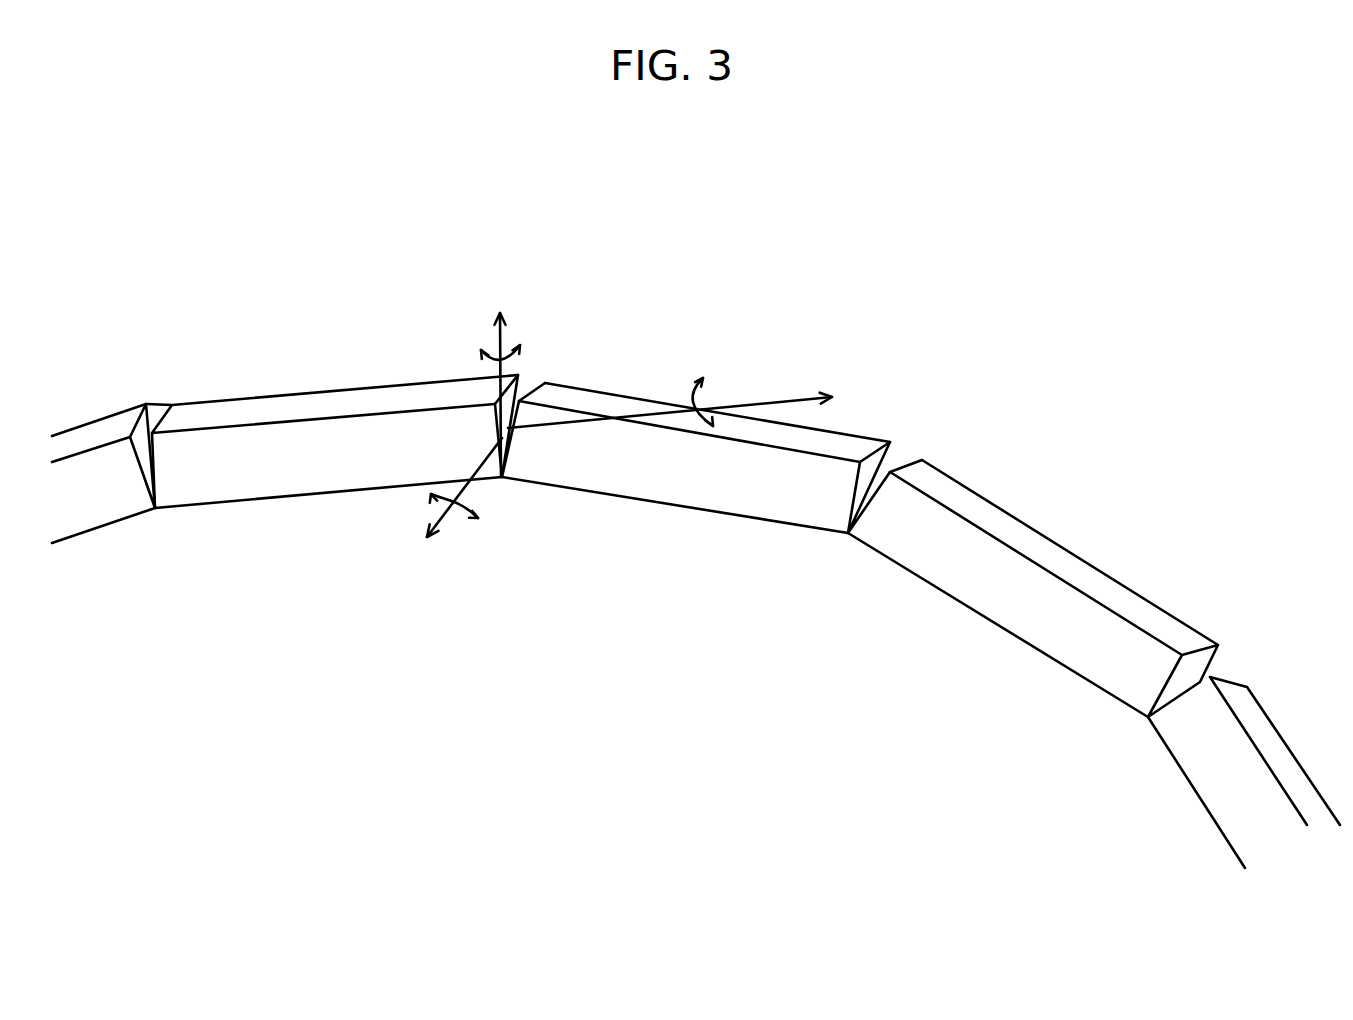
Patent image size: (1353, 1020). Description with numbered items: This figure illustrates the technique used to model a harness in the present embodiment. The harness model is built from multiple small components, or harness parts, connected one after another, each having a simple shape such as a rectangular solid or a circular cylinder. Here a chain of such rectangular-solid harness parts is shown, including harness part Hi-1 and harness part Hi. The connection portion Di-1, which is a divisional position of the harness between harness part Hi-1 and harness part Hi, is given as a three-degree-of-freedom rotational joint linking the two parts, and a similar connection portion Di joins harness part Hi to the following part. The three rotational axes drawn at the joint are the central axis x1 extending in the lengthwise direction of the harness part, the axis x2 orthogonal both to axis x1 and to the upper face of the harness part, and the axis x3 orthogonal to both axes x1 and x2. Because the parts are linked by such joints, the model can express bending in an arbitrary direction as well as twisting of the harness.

The harness part Hi-1 is at (345, 389).
The harness part Hi is at (845, 431).
The connection portion Di-1 is at (500, 488).
The connection portion Di is at (842, 542).
The central axis x1 is at (670, 391).
The axis x2 is at (500, 377).
The axis x3 is at (454, 512).